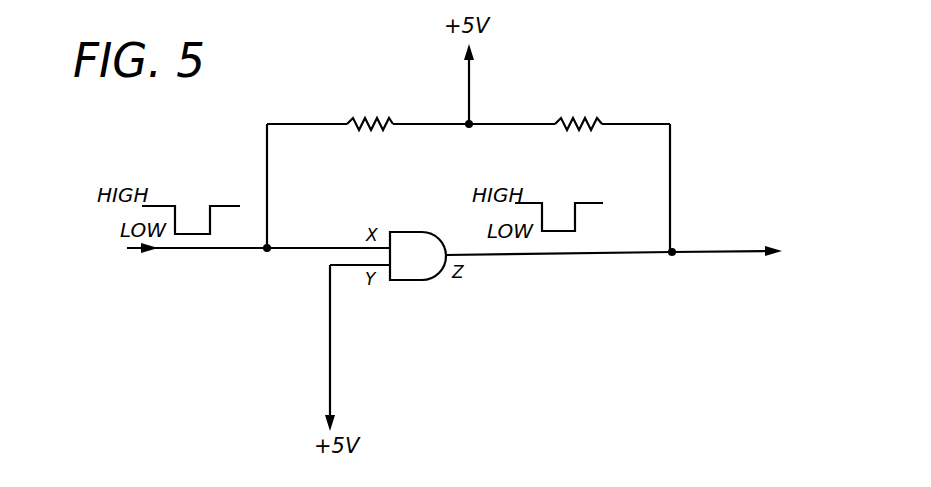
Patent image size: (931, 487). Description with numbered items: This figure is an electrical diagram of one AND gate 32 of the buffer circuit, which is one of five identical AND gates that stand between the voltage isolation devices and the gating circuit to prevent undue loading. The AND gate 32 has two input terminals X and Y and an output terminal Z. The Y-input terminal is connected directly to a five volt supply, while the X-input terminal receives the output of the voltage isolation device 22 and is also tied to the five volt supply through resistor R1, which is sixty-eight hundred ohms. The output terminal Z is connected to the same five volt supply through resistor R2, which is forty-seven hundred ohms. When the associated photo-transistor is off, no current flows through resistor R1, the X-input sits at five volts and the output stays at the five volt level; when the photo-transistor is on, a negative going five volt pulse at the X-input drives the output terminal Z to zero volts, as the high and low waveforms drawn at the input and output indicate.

The AND gate 32 is at (418, 281).
The voltage isolation device 22 is at (205, 282).
The resistor R1 is at (370, 110).
The resistor R2 is at (578, 110).